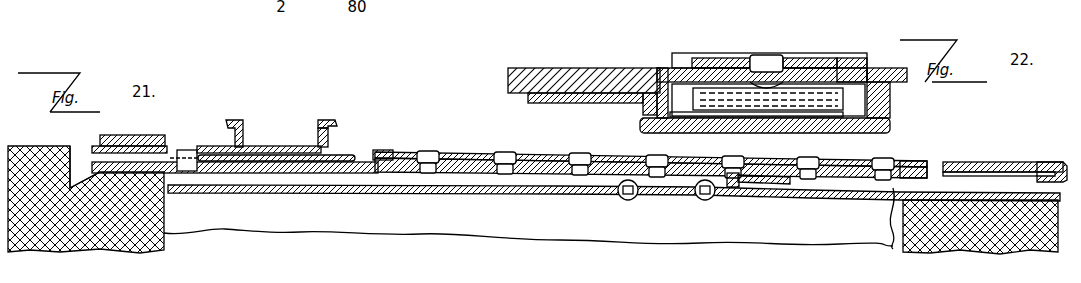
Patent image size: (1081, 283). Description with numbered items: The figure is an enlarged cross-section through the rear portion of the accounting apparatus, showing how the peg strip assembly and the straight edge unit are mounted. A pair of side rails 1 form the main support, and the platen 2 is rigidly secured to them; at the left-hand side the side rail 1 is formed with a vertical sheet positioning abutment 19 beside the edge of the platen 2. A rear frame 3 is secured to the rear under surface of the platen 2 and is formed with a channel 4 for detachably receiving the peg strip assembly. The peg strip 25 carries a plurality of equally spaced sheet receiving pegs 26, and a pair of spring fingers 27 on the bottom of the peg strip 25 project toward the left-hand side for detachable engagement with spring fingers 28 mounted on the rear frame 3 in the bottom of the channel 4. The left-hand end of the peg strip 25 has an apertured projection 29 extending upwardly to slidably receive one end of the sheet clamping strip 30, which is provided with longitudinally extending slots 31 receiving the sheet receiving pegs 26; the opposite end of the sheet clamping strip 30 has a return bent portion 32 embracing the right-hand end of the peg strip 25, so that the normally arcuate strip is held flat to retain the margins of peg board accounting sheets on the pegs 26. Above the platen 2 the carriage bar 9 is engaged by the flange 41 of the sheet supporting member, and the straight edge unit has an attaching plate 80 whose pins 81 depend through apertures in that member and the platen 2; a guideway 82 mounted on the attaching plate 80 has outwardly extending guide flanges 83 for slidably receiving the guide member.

In FIG. 21, the side rail 1 is at (37, 145).
In FIG. 21, the platen 2 is at (258, 166).
In FIG. 21, the rear frame 3 is at (462, 195).
In FIG. 22, the rear frame 3 is at (588, 94).
In FIG. 21, the channel 4 is at (543, 179).
In FIG. 22, the channel 4 is at (681, 119).
In FIG. 21, the carriage bar 9 is at (148, 135).
In FIG. 21, the sheet positioning abutment 19 is at (74, 146).
In FIG. 21, the peg strip 25 is at (550, 163).
In FIG. 22, the peg strip 25 is at (866, 66).
In FIG. 21, the sheet receiving pegs 26 is at (430, 150).
In FIG. 22, the sheet receiving pegs 26 is at (768, 56).
In FIG. 21, the spring fingers 27 is at (769, 185).
In FIG. 22, the spring fingers 27 is at (880, 100).
In FIG. 21, the spring fingers 28 is at (733, 187).
In FIG. 21, the apertured projection 29 is at (385, 150).
In FIG. 22, the apertured projection 29 is at (805, 58).
In FIG. 21, the sheet clamping strip 30 is at (983, 161).
In FIG. 22, the sheet clamping strip 30 is at (842, 60).
In FIG. 21, the slots 31 is at (862, 162).
In FIG. 21, the return bent portion 32 is at (1058, 165).
In FIG. 21, the flange 41 is at (105, 145).
In FIG. 21, the attaching plate 80 is at (214, 146).
In FIG. 21, the pins 81 is at (187, 149).
In FIG. 21, the guideway 82 is at (329, 137).
In FIG. 21, the guide flanges 83 is at (336, 123).